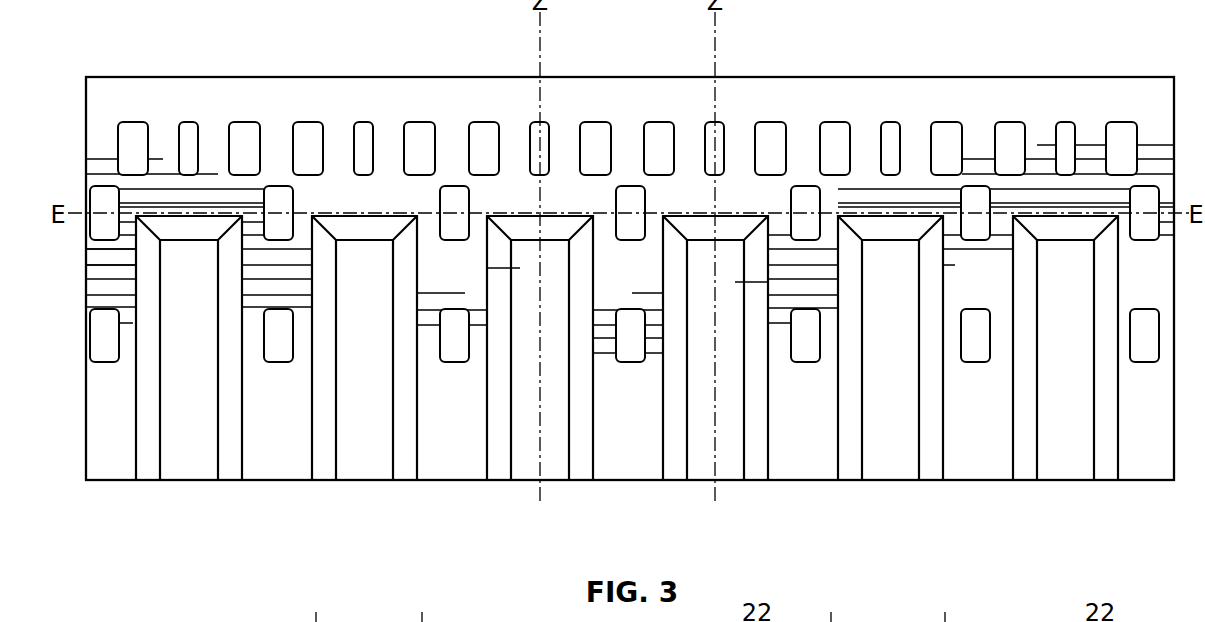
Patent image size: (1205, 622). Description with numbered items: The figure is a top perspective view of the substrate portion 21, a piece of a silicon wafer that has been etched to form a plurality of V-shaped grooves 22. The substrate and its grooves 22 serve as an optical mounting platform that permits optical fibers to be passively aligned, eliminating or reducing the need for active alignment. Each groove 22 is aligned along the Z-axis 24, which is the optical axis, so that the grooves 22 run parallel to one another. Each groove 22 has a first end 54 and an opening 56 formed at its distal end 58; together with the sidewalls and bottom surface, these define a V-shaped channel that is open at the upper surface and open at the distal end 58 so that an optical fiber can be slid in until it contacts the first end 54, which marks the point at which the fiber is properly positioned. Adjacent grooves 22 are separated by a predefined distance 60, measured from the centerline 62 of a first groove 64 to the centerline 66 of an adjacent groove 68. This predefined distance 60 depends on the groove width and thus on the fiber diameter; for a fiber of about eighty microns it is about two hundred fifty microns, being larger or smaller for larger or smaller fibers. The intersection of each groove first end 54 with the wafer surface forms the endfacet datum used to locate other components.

The substrate portion 21 is at (1042, 88).
The V-shaped groove 22 is at (145, 474).
The Z-axis 24 is at (715, 22).
The first end 54 is at (188, 229).
The opening 56 is at (211, 478).
The distal end 58 is at (230, 474).
The predefined distance 60 is at (714, 29).
The centerline of first groove 62 is at (540, 48).
The first groove 64 is at (520, 277).
The centerline of adjacent groove 66 is at (715, 48).
The adjacent groove 68 is at (768, 282).